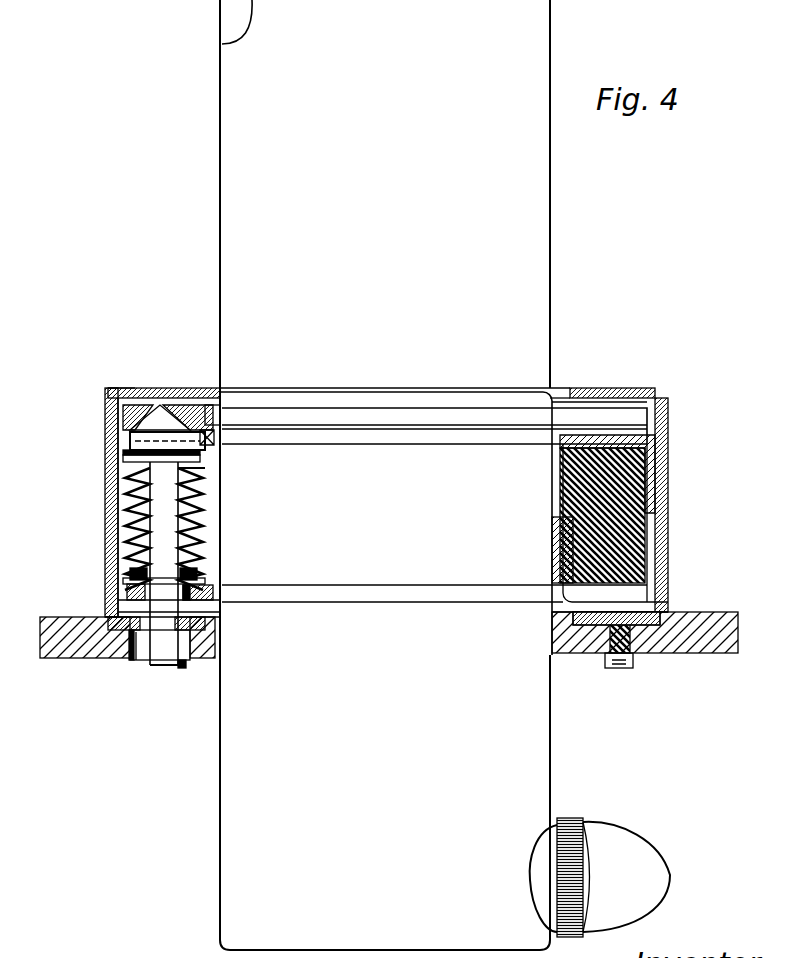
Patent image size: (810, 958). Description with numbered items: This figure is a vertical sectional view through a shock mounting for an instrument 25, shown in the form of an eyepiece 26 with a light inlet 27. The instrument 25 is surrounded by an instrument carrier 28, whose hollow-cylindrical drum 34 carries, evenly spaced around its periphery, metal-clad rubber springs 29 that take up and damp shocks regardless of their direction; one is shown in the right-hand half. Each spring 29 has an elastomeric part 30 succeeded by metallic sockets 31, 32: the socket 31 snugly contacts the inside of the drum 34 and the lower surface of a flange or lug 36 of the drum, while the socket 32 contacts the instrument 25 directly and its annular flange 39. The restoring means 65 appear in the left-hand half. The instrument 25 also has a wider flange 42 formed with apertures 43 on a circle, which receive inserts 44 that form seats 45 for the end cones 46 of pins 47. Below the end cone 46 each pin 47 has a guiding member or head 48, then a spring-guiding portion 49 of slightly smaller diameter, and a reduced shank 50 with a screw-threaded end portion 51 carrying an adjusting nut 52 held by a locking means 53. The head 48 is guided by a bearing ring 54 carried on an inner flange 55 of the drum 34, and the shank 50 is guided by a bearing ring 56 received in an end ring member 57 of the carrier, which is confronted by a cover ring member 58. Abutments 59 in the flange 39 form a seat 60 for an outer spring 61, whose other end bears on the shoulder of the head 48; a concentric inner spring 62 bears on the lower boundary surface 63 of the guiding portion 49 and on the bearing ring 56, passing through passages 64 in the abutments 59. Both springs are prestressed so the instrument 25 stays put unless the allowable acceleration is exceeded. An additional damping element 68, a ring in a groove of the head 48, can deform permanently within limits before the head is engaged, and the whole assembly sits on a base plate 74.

The instrument 25 is at (217, 187).
The eyepiece 26 is at (612, 840).
The light inlet 27 is at (240, 28).
The instrument carrier 28 is at (106, 440).
The metal-clad rubber spring 29 is at (645, 540).
The elastomeric part 30 is at (612, 505).
The metallic socket 31 is at (640, 455).
The metallic socket 32 is at (572, 575).
The hollow-cylindrical drum 34 is at (108, 568).
The flange or lug 36 is at (627, 432).
The annular flange 39 is at (476, 593).
The wider flange 42 is at (336, 415).
The aperture 43 is at (133, 398).
The insert 44 is at (183, 410).
The seat 45 is at (220, 418).
The end cone 46 is at (177, 417).
The pin 47 is at (130, 512).
The guiding member 48 is at (152, 435).
The spring-guiding portion 49 is at (150, 456).
The shank 50 is at (135, 578).
The screw-threaded end portion 51 is at (157, 666).
The adjusting nut 52 is at (140, 650).
The locking means 53 is at (180, 668).
The bearing ring 54 is at (210, 464).
The inner flange 55 is at (210, 440).
The bearing ring 56 is at (160, 646).
The end ring member 57 is at (127, 632).
The cover ring member 58 is at (147, 388).
The abutment 59 is at (140, 603).
The seat 60 is at (197, 583).
The outer spring 61 is at (130, 495).
The inner spring 62 is at (130, 552).
The lower boundary surface 63 is at (130, 447).
The passage 64 is at (129, 633).
The restoring means 65 is at (193, 485).
The additional damping element 68 is at (222, 448).
The base plate 74 is at (720, 643).